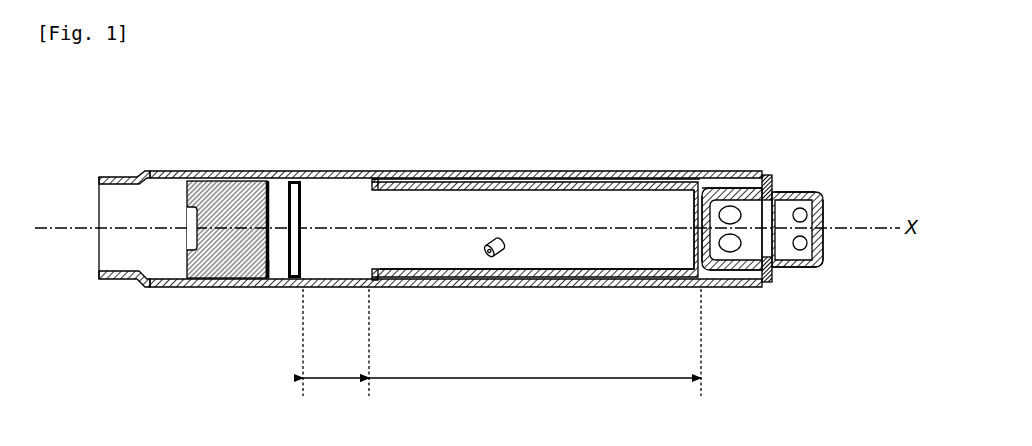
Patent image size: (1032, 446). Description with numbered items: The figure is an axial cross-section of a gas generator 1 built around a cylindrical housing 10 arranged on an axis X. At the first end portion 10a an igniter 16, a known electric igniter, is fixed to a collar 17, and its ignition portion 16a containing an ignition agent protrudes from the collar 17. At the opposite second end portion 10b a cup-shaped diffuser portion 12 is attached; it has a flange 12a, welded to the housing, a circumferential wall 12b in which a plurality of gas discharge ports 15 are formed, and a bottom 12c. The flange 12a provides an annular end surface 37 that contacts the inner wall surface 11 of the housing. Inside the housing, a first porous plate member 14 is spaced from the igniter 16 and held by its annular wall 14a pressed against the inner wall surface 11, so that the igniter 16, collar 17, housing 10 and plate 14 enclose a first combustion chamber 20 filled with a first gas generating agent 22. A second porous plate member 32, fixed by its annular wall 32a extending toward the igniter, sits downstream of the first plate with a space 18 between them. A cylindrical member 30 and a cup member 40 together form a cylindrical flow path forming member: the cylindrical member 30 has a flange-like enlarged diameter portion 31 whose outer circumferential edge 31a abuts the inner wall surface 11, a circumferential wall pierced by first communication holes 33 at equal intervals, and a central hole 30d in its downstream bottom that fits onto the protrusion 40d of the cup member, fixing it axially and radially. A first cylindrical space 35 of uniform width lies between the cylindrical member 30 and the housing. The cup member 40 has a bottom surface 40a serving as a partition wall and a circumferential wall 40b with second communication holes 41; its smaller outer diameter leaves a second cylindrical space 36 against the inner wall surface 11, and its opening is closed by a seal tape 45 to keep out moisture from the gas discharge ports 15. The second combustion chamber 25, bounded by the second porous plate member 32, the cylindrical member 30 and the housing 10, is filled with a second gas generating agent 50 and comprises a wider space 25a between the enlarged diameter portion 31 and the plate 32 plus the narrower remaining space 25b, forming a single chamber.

The gas generator 1 is at (540, 153).
The cylindrical housing 10 is at (440, 171).
The first end portion 10a is at (127, 176).
The second end portion 10b is at (767, 287).
The inner wall surface 11 is at (631, 181).
The diffuser portion 12 is at (827, 192).
The flange 12a is at (776, 274).
The circumferential wall 12b is at (825, 263).
The bottom 12c is at (825, 212).
The first porous plate member 14 is at (269, 196).
The annular wall 14a is at (261, 273).
The gas discharge ports 15 is at (801, 193).
The igniter 16 is at (102, 242).
The ignition portion 16a is at (194, 255).
The collar 17 is at (159, 275).
The space 18 is at (280, 250).
The first combustion chamber 20 is at (208, 184).
The first gas generating agent 22 is at (227, 229).
The second combustion chamber 25 is at (506, 216).
The space 25a is at (336, 390).
The remaining space 25b is at (535, 390).
The cylindrical member 30 is at (490, 187).
The central hole 30d is at (697, 227).
The enlarged diameter portion 31 is at (370, 281).
The outer circumferential edge 31a is at (375, 179).
The second porous plate member 32 is at (301, 189).
The annular wall 32a is at (291, 271).
The first communication holes 33 is at (590, 270).
The first cylindrical space 35 is at (587, 181).
The second cylindrical space 36 is at (715, 184).
The annular end surface 37 is at (766, 261).
The cup member 40 is at (749, 187).
The bottom surface 40a is at (719, 271).
The circumferential wall 40b is at (746, 271).
The protrusion 40d is at (700, 232).
The second communication holes 41 is at (733, 199).
The seal tape 45 is at (769, 212).
The second gas generating agent 50 is at (505, 258).